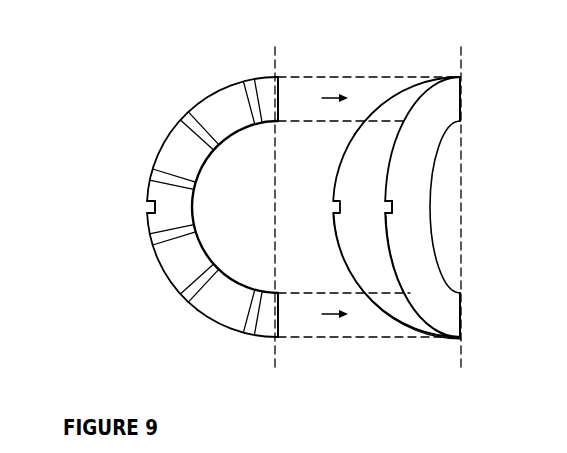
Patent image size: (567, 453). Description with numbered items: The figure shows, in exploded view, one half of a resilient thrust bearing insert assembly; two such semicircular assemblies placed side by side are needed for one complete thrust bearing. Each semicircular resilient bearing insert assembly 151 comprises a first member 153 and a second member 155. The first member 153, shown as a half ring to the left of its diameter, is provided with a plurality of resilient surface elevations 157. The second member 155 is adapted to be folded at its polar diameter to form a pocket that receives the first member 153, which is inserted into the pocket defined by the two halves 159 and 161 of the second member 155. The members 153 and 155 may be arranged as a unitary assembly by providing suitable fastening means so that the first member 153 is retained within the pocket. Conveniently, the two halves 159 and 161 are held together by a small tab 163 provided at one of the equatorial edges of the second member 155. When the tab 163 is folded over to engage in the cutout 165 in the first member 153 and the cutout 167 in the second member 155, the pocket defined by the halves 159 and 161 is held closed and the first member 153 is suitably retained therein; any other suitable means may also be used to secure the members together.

The semicircular resilient bearing insert assembly 151 is at (122, 122).
The first member 153 is at (207, 97).
The second member 155 is at (417, 80).
The resilient surface elevations 157 is at (190, 292).
The half of the second member 159 is at (379, 104).
The half of the second member 161 is at (418, 173).
The tab 163 is at (388, 207).
The cutout 165 is at (148, 205).
The cutout 167 is at (367, 211).